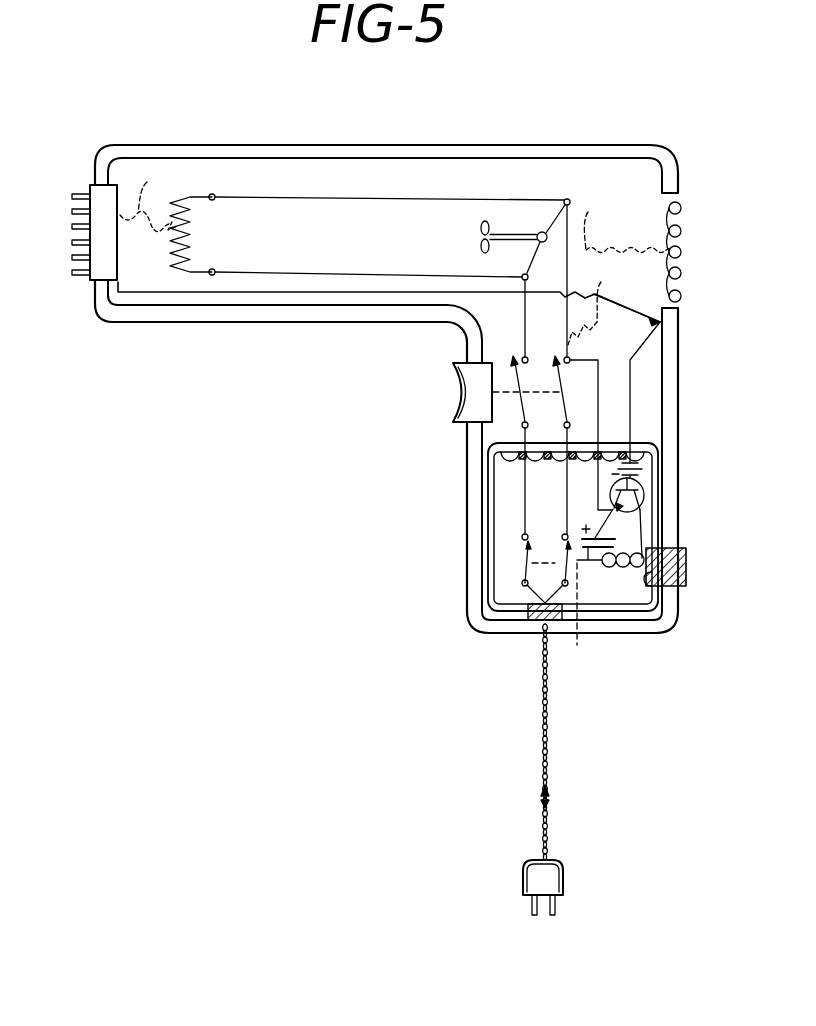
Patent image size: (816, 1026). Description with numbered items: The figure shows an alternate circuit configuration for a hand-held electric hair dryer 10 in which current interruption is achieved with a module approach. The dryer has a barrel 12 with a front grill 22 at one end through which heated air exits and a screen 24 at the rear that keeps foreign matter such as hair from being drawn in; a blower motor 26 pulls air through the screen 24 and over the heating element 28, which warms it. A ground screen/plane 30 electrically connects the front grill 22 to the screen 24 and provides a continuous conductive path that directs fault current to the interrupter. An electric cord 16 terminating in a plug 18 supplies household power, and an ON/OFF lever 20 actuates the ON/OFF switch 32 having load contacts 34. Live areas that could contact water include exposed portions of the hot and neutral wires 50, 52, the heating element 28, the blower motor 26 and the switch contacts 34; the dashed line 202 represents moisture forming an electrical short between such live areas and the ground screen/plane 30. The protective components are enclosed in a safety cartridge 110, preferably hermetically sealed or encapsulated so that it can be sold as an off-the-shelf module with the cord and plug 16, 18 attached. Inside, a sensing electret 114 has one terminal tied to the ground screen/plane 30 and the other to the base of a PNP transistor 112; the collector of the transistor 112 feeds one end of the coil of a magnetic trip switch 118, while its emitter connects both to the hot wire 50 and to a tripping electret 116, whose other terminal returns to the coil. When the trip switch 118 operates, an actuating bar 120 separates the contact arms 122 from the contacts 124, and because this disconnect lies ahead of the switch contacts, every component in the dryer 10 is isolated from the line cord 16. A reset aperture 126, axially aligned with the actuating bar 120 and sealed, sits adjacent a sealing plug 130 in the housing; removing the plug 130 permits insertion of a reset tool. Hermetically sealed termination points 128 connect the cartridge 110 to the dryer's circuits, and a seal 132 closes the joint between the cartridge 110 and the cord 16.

The hair dryer 10 is at (258, 388).
The barrel 12 is at (375, 148).
The electric cord 16 is at (548, 766).
The plug 18 is at (564, 882).
The ON/OFF lever 20 is at (452, 382).
The front grill 22 is at (85, 188).
The screen 24 is at (681, 207).
The blower motor 26 is at (488, 241).
The heating element 28 is at (185, 216).
The ground screen/plane 30 is at (162, 291).
The ON/OFF switch 32 is at (570, 362).
The load contacts 34 is at (560, 405).
The hot wire 50 is at (622, 366).
The neutral wire 52 is at (523, 340).
The safety cartridge 110 is at (656, 443).
The PNP transistor 112 is at (645, 495).
The sensing electret 114 is at (641, 469).
The tripping electret 116 is at (587, 550).
The magnetic trip switch 118 is at (643, 572).
The actuating bar 120 is at (577, 595).
The contact arms 122 is at (563, 574).
The contacts 124 is at (565, 534).
The reset aperture 126 is at (653, 579).
The termination points 128 is at (520, 447).
The sealing plug 130 is at (686, 548).
The seal 132 is at (530, 616).
The electrical short 202 is at (395, 255).